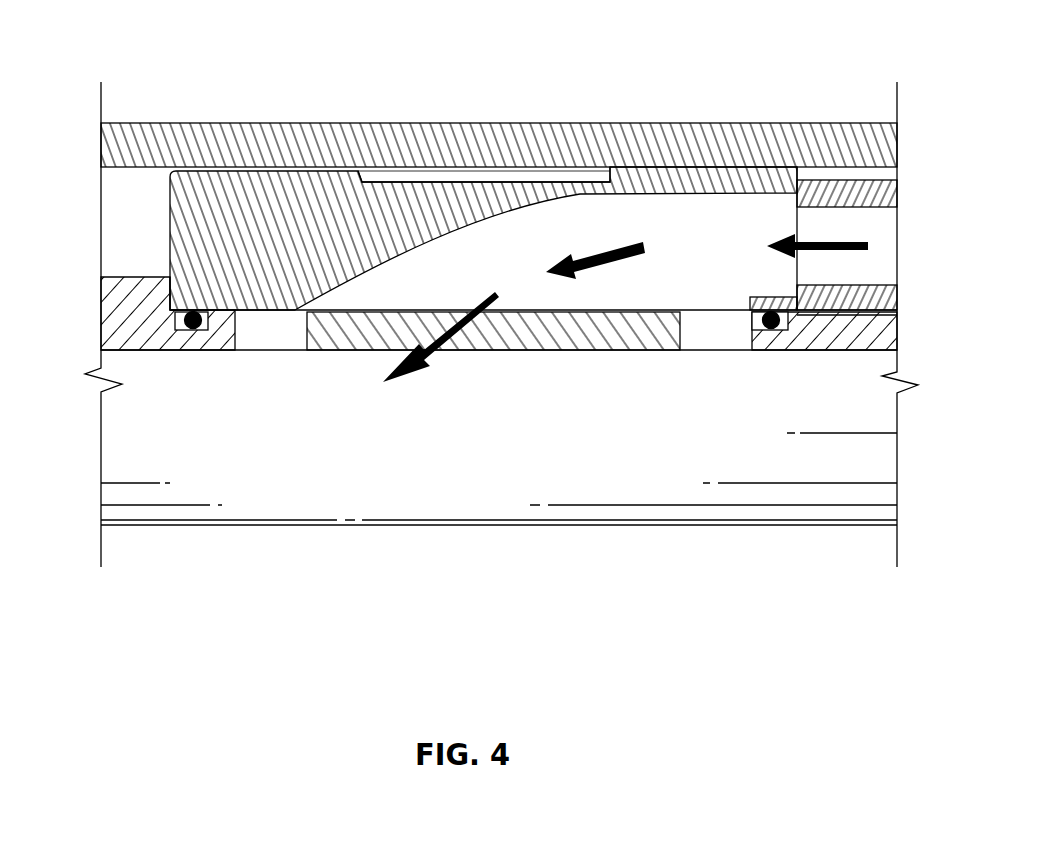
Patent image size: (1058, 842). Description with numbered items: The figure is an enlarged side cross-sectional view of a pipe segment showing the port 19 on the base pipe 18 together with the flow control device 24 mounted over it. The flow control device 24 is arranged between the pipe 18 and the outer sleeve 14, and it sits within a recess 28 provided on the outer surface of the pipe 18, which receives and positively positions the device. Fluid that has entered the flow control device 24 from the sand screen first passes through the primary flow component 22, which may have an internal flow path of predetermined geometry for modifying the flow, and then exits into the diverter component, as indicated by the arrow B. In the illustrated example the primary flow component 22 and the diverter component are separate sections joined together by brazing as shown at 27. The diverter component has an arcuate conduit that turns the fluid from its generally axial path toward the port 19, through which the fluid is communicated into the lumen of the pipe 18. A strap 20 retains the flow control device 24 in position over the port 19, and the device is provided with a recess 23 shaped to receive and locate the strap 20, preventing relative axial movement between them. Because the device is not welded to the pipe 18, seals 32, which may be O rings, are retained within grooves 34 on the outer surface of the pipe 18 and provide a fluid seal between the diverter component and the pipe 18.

The sleeve 14 is at (470, 123).
The base pipe 18 is at (110, 312).
The port 19 is at (515, 352).
The strap 20 is at (445, 165).
The primary flow component 22 is at (895, 191).
The recess 23 is at (610, 178).
The flow control device 24 is at (282, 207).
The brazing 27 is at (802, 180).
The recess 28 is at (178, 292).
The seal 32 is at (196, 352).
The groove 34 is at (174, 345).
The arrow B is at (862, 250).